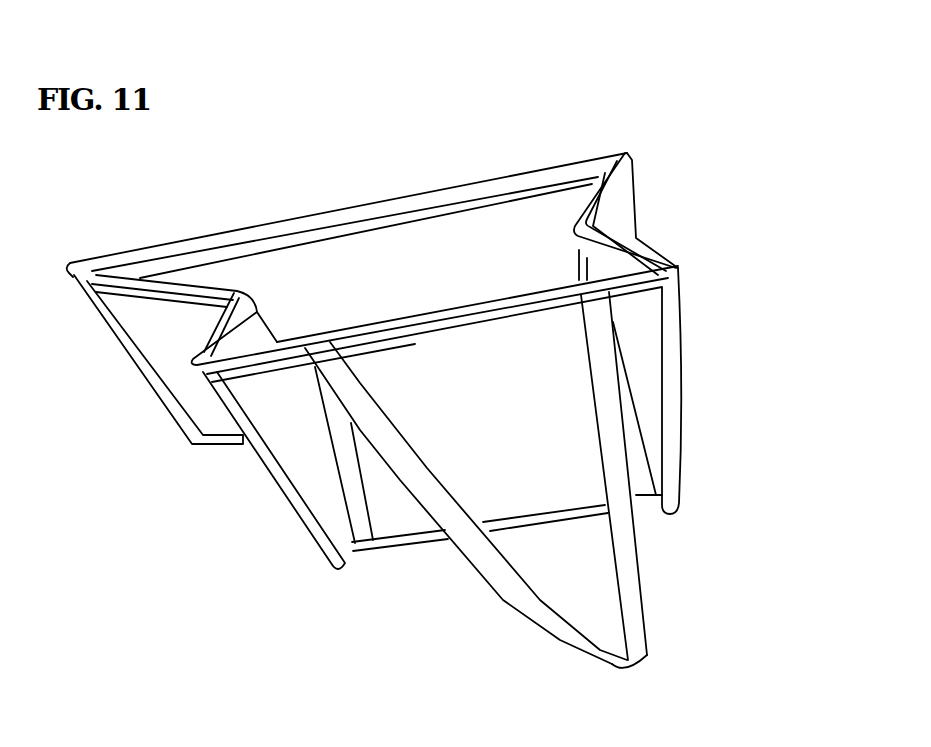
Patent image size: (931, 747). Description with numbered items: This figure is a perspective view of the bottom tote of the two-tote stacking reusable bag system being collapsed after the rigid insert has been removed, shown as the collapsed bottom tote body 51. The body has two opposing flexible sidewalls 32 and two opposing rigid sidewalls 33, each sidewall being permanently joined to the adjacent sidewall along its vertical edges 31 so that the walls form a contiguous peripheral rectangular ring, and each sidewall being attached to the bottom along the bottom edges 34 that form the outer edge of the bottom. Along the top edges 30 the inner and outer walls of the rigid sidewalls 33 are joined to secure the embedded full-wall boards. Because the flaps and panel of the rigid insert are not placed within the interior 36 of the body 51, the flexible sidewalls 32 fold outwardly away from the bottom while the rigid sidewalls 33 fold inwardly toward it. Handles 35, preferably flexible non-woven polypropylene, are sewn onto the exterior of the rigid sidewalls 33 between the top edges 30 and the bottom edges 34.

The collapsed bottom tote body 51 is at (847, 130).
The interior 36 is at (293, 265).
The flexible sidewall 32 is at (622, 213).
The top edge 30 is at (670, 273).
The vertical edge 31 is at (672, 345).
The handle 35 is at (637, 573).
The rigid sidewall 33 is at (307, 463).
The bottom edge 34 is at (407, 542).